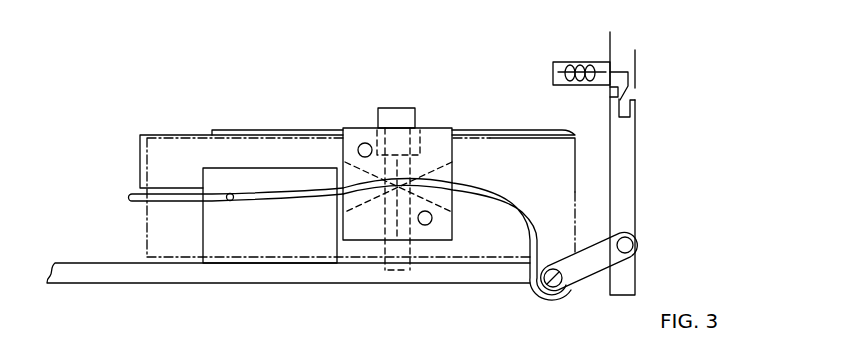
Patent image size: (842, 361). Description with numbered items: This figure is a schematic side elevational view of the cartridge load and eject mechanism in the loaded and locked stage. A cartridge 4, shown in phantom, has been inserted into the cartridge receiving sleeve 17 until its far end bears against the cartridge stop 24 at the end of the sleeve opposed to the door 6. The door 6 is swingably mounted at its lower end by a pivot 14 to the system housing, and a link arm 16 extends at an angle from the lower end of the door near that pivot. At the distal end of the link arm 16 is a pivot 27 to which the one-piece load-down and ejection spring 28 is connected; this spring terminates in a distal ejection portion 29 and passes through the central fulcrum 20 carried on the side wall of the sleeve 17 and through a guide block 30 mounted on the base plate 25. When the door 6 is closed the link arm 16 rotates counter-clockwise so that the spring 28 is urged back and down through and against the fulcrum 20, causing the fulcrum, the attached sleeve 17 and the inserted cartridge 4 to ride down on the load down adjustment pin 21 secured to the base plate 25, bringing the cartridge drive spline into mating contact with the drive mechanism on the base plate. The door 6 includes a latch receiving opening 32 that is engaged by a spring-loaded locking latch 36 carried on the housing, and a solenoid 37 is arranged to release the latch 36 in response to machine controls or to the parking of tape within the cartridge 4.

The cartridge 4 is at (147, 237).
The door 6 is at (628, 182).
The pivot 14 is at (625, 245).
The link arm 16 is at (588, 267).
The cartridge receiving sleeve 17 is at (477, 132).
The central fulcrum 20 is at (428, 140).
The load down adjustment pin 21 is at (408, 115).
The cartridge stop 24 is at (140, 151).
The base plate 25 is at (222, 273).
The pivot 27 is at (533, 302).
The load-down and ejection spring 28 is at (493, 199).
The distal ejection portion 29 is at (130, 197).
The guide block 30 is at (305, 243).
The latch receiving opening 32 is at (632, 100).
The locking latch 36 is at (628, 80).
The solenoid 37 is at (580, 62).